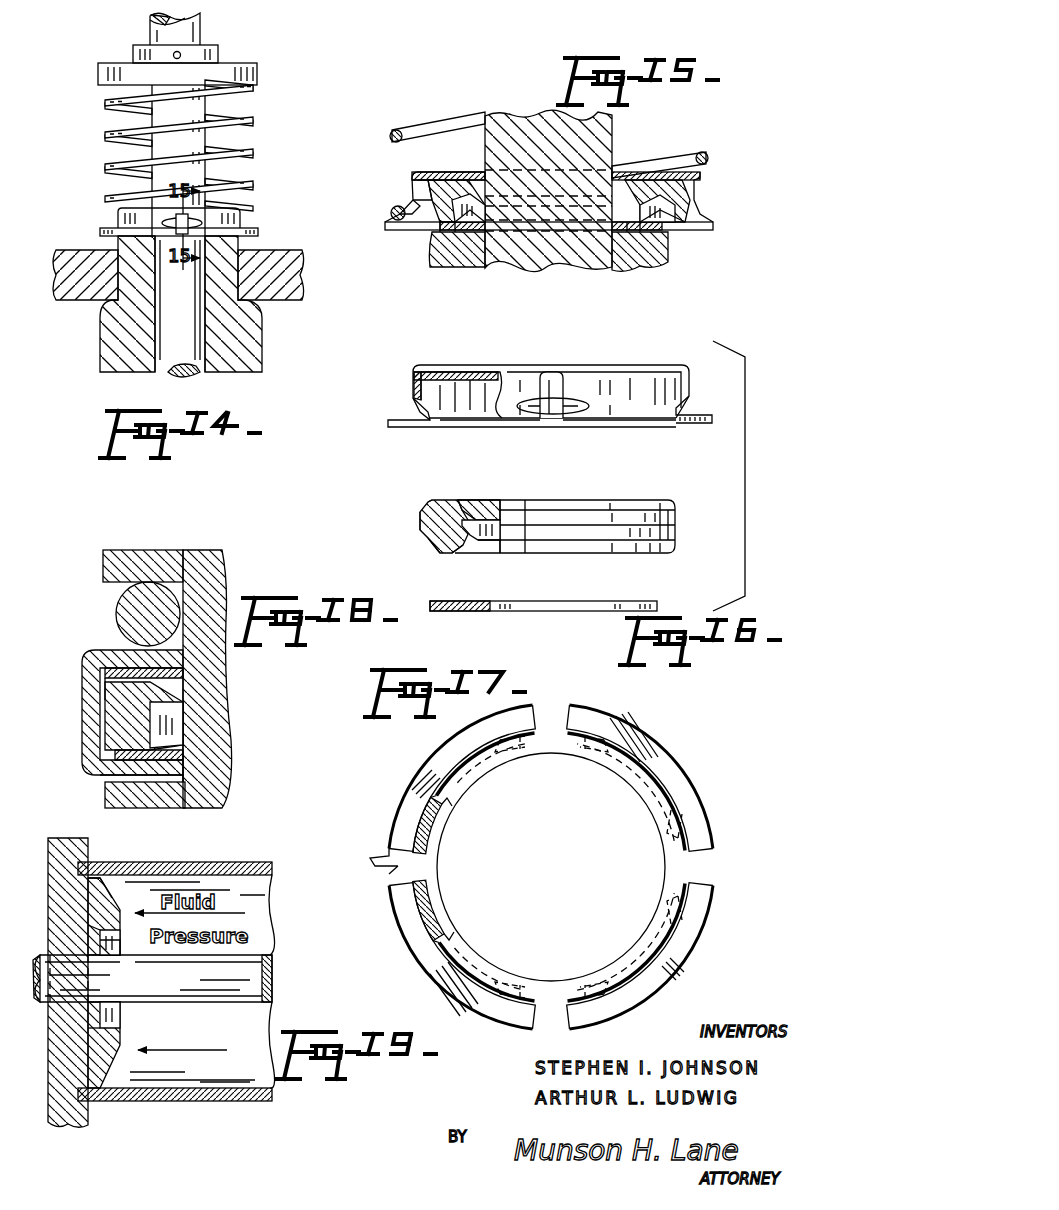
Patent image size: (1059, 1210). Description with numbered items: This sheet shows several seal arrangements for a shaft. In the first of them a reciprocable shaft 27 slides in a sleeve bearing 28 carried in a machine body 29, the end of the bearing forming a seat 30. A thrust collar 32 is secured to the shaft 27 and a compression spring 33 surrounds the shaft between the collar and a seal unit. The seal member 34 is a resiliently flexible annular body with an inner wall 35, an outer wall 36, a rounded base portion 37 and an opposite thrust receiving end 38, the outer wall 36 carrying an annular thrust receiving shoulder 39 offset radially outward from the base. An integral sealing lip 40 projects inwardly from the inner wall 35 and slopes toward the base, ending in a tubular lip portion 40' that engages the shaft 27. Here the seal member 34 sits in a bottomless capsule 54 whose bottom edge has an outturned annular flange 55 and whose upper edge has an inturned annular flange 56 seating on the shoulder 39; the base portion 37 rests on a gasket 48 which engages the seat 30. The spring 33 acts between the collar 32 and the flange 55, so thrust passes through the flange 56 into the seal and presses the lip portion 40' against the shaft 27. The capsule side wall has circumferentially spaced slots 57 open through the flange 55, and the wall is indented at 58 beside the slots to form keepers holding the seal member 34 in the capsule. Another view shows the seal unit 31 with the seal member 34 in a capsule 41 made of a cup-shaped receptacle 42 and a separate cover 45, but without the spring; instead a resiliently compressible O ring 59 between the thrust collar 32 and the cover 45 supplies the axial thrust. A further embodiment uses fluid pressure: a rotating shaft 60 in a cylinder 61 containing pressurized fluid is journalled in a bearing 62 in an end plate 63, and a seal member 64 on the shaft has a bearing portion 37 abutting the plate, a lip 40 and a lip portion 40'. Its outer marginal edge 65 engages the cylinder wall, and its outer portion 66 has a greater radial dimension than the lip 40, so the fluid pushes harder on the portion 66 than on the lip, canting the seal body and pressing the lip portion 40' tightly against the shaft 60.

In FIG. 14, the shaft 27 is at (172, 324).
In FIG. 15, the shaft 27 is at (614, 155).
In FIG. 14, the sleeve bearing 28 is at (240, 246).
In FIG. 15, the sleeve bearing 28 is at (668, 256).
In FIG. 18, the sleeve bearing 28 is at (105, 798).
In FIG. 14, the machine body 29 is at (62, 259).
In FIG. 14, the seat 30 is at (140, 268).
In FIG. 15, the seat 30 is at (452, 226).
In FIG. 18, the seat 30 is at (158, 788).
In FIG. 18, the seal unit 31 is at (82, 694).
In FIG. 14, the thrust collar 32 is at (257, 70).
In FIG. 18, the thrust collar 32 is at (103, 570).
In FIG. 14, the compression spring 33 is at (253, 150).
In FIG. 15, the seal member 34 is at (662, 198).
In FIG. 16, the seal member 34 is at (607, 500).
In FIG. 18, the seal member 34 is at (118, 720).
In FIG. 16, the inner wall 35 is at (462, 548).
In FIG. 16, the outer wall 36 is at (420, 521).
In FIG. 15, the base portion 37 is at (664, 218).
In FIG. 16, the base portion 37 is at (434, 542).
In FIG. 19, the base portion 37 is at (96, 926).
In FIG. 15, the thrust receiving end 38 is at (455, 180).
In FIG. 16, the thrust receiving end 38 is at (448, 500).
In FIG. 15, the thrust receiving shoulder 39 is at (420, 202).
In FIG. 16, the thrust receiving shoulder 39 is at (430, 504).
In FIG. 15, the sealing lip 40 is at (490, 181).
In FIG. 16, the sealing lip 40 is at (492, 500).
In FIG. 19, the sealing lip 40 is at (138, 963).
In FIG. 15, the lip portion 40' is at (498, 190).
In FIG. 16, the lip portion 40' is at (517, 565).
In FIG. 19, the lip portion 40' is at (109, 978).
In FIG. 18, the capsule 41 is at (85, 779).
In FIG. 18, the receptacle 42 is at (82, 760).
In FIG. 18, the cover 45 is at (118, 672).
In FIG. 15, the gasket 48 is at (630, 232).
In FIG. 16, the gasket 48 is at (657, 606).
In FIG. 14, the bottomless capsule 54 is at (115, 215).
In FIG. 15, the bottomless capsule 54 is at (690, 182).
In FIG. 16, the bottomless capsule 54 is at (655, 365).
In FIG. 17, the bottomless capsule 54 is at (668, 780).
In FIG. 14, the outturned annular flange 55 is at (240, 232).
In FIG. 15, the outturned annular flange 55 is at (385, 231).
In FIG. 16, the outturned annular flange 55 is at (388, 423).
In FIG. 17, the outturned annular flange 55 is at (688, 802).
In FIG. 15, the inturned annular flange 56 is at (420, 180).
In FIG. 16, the inturned annular flange 56 is at (424, 366).
In FIG. 17, the inturned annular flange 56 is at (660, 806).
In FIG. 16, the slots 57 is at (552, 372).
In FIG. 17, the slots 57 is at (389, 858).
In FIG. 15, the indentations 58 is at (412, 231).
In FIG. 16, the indentations 58 is at (690, 412).
In FIG. 17, the indentations 58 is at (436, 890).
In FIG. 18, the O ring 59 is at (118, 625).
In FIG. 19, the shaft 60 is at (255, 975).
In FIG. 19, the cylinder 61 is at (236, 862).
In FIG. 19, the bearing 62 is at (76, 1010).
In FIG. 19, the end plate 63 is at (63, 1127).
In FIG. 19, the seal member 64 is at (122, 1028).
In FIG. 19, the outer marginal edge 65 is at (110, 880).
In FIG. 19, the outer portion 66 is at (105, 900).